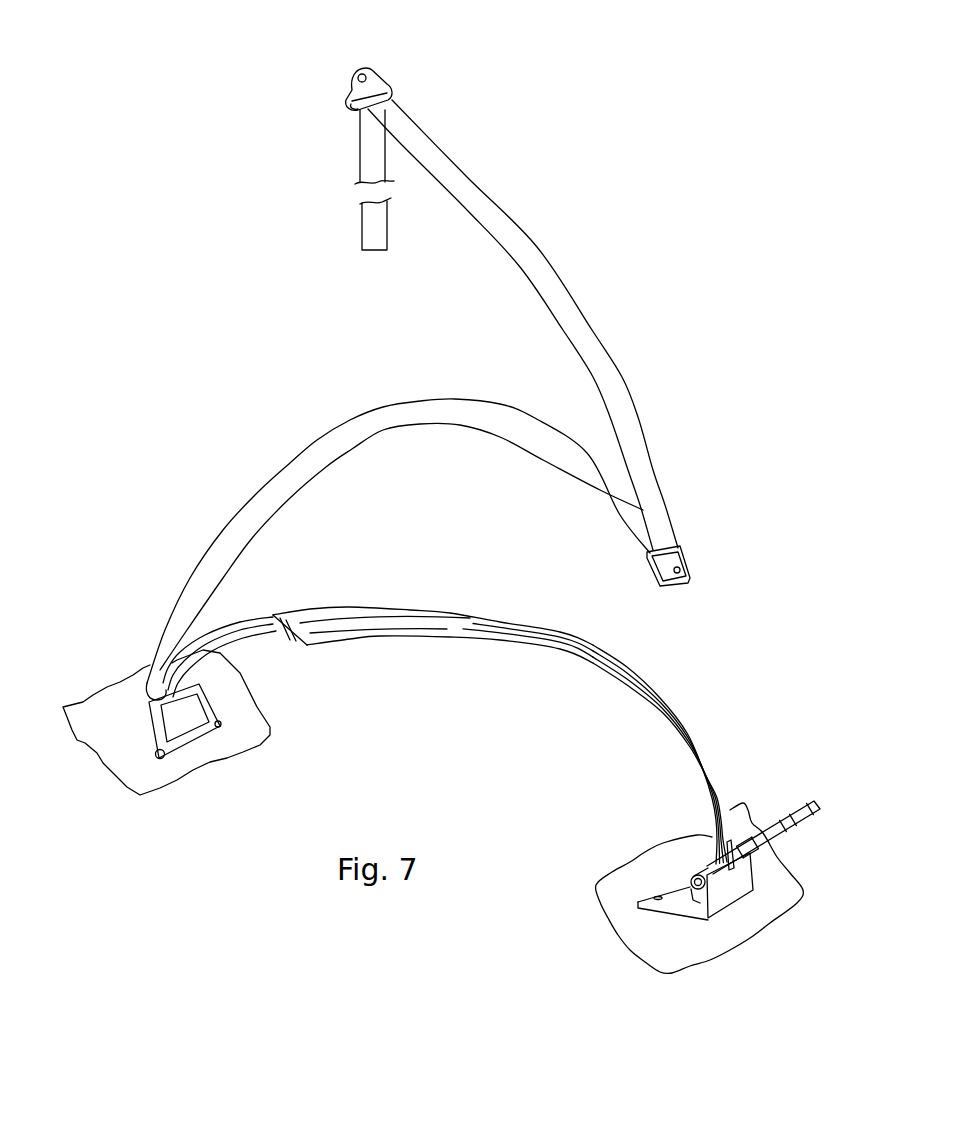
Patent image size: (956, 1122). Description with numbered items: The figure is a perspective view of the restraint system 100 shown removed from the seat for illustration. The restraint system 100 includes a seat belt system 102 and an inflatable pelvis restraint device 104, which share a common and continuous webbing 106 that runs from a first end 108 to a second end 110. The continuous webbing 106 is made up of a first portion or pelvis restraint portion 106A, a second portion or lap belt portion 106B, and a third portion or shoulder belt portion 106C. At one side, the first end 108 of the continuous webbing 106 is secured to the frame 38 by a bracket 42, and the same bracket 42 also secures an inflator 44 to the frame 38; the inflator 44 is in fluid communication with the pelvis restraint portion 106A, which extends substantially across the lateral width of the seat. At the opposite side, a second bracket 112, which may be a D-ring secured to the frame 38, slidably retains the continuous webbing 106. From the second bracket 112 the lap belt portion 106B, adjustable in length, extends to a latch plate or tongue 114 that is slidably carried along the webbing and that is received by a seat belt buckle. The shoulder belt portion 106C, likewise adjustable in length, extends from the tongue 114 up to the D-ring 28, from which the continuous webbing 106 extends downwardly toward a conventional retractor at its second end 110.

The D-ring 28 is at (352, 70).
The frame 38 is at (247, 742).
The bracket 42 is at (730, 887).
The inflator 44 is at (797, 827).
The restraint system 100 is at (573, 206).
The seat belt system 102 is at (648, 448).
The inflatable pelvis restraint device 104 is at (585, 712).
The continuous webbing 106 is at (347, 420).
The pelvis restraint portion 106A is at (510, 640).
The lap belt portion 106B is at (403, 433).
The shoulder belt portion 106C is at (588, 317).
The first end 108 is at (720, 830).
The second end 110 is at (371, 227).
The second bracket 112 is at (157, 733).
The tongue 114 is at (650, 562).